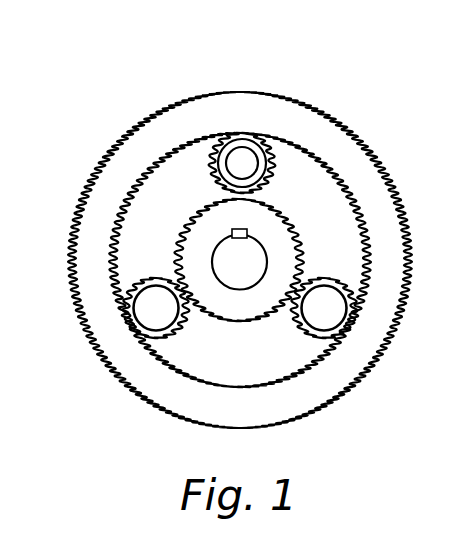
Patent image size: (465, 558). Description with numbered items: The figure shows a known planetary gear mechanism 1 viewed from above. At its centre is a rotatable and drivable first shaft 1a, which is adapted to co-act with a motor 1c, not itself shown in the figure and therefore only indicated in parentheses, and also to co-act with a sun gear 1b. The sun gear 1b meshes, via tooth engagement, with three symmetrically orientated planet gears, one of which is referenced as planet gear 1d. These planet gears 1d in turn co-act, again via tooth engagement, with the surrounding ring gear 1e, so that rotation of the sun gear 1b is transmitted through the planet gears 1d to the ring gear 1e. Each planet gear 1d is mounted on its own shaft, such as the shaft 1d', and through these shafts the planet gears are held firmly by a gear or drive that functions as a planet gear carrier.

The planetary gear mechanism 1 is at (380, 114).
The first shaft 1a is at (252, 253).
The sun gear 1b is at (292, 260).
The motor 1c is at (173, 82).
The planet gear 1d is at (246, 178).
The shaft 1d' is at (298, 121).
The ring gear 1e is at (215, 110).